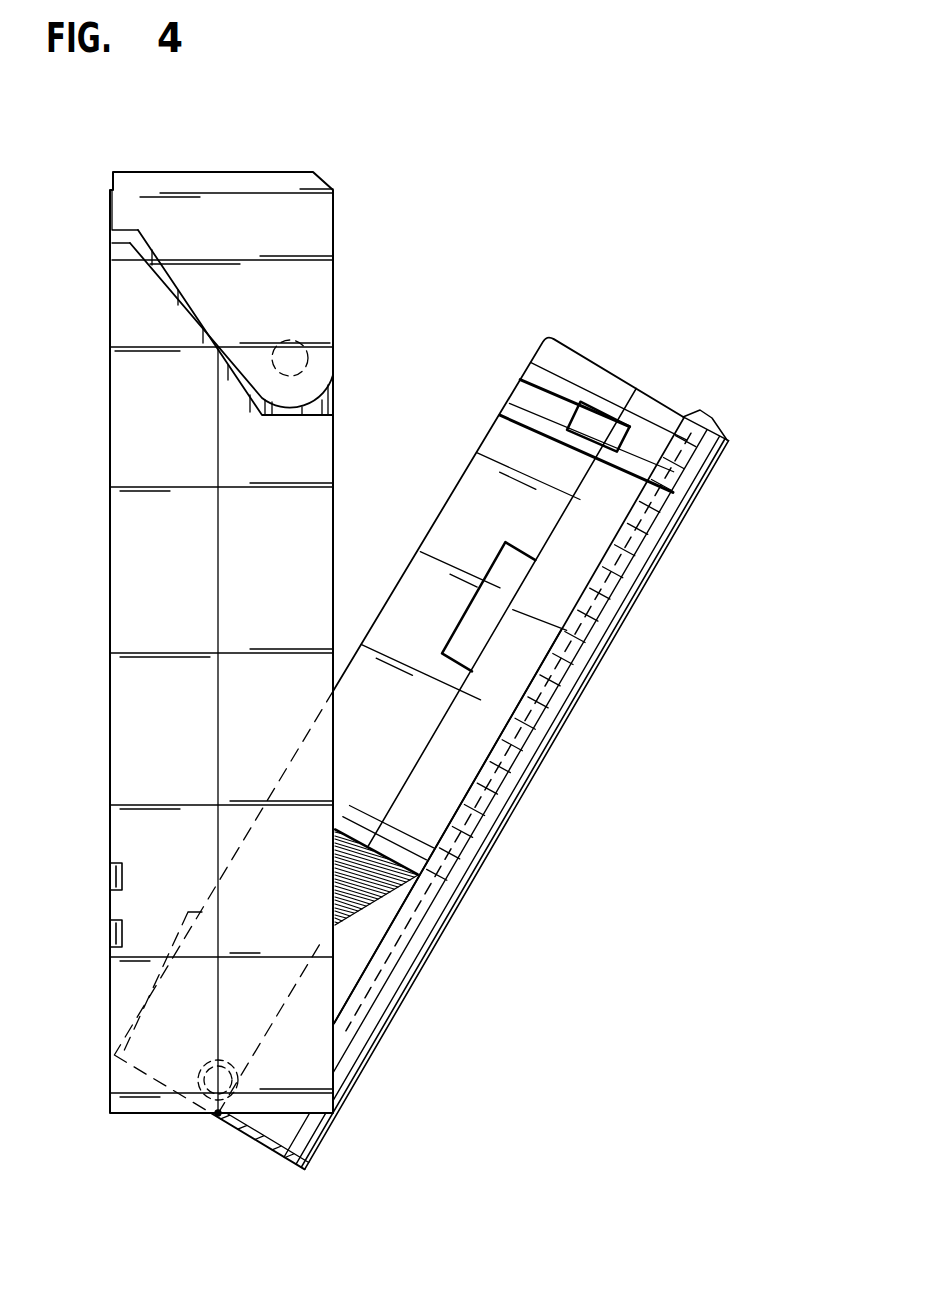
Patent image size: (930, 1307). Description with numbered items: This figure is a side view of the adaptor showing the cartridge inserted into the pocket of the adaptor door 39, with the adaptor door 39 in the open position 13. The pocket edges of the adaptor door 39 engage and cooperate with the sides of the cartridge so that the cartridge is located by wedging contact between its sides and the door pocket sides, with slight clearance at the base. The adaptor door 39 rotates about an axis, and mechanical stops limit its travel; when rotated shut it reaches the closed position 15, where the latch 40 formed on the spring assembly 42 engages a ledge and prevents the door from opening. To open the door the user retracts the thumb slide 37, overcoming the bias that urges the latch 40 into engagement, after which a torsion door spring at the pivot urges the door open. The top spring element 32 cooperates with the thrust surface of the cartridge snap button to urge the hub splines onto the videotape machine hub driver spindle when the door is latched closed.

The closed position 15 is at (247, 144).
The open position 13 is at (684, 360).
The latch 40 is at (700, 420).
The adaptor door 39 is at (718, 470).
The spring assembly 42 is at (588, 640).
The top spring element 32 is at (497, 730).
The thumb slide 37 is at (216, 1122).